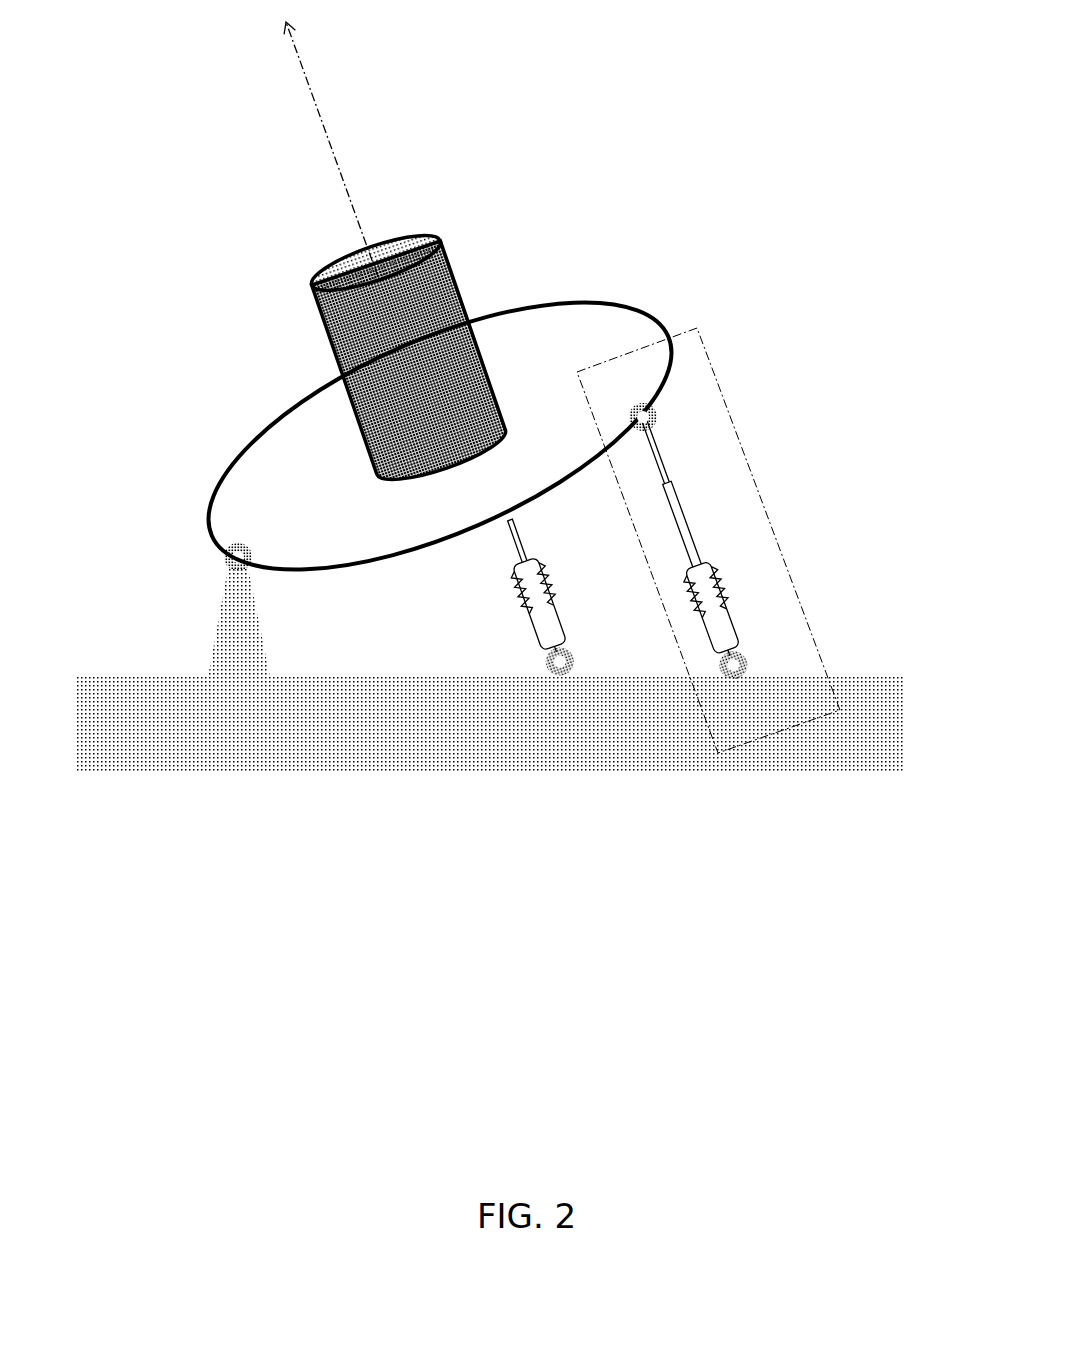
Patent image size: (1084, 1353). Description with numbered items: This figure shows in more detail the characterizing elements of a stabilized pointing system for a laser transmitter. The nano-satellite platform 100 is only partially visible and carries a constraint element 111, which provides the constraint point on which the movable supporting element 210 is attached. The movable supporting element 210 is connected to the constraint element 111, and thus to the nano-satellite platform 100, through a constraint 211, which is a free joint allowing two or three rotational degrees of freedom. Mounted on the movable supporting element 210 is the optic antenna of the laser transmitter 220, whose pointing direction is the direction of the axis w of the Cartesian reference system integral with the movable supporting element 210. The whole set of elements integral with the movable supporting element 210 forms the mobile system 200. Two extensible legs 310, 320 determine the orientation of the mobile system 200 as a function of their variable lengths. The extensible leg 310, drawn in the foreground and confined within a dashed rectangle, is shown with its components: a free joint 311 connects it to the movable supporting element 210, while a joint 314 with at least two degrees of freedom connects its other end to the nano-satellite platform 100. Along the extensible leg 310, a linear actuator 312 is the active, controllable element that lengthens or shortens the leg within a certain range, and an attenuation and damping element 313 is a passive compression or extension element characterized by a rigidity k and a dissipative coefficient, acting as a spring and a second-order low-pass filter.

The nano-satellite platform 100 is at (232, 746).
The constraint element 111 is at (213, 637).
The mobile system 200 is at (183, 342).
The movable supporting element 210 is at (364, 532).
The constraint 211 is at (212, 556).
The optic antenna of the laser transmitter 220 is at (429, 367).
The extensible leg 310 is at (772, 465).
The free joint 311 is at (658, 410).
The linear actuator 312 is at (680, 495).
The attenuation and damping element 313 is at (722, 568).
The joint 314 is at (758, 665).
The extensible leg 320 is at (567, 585).
The axis w is at (332, 149).